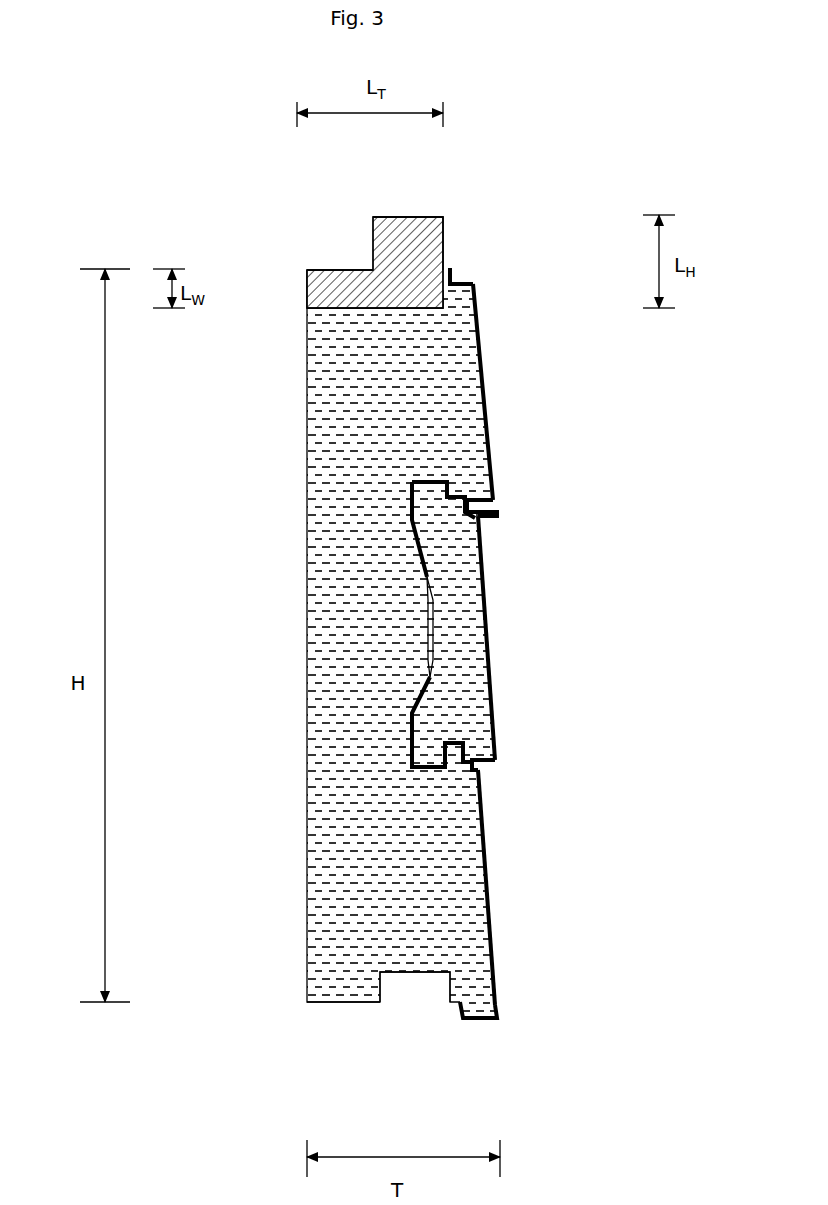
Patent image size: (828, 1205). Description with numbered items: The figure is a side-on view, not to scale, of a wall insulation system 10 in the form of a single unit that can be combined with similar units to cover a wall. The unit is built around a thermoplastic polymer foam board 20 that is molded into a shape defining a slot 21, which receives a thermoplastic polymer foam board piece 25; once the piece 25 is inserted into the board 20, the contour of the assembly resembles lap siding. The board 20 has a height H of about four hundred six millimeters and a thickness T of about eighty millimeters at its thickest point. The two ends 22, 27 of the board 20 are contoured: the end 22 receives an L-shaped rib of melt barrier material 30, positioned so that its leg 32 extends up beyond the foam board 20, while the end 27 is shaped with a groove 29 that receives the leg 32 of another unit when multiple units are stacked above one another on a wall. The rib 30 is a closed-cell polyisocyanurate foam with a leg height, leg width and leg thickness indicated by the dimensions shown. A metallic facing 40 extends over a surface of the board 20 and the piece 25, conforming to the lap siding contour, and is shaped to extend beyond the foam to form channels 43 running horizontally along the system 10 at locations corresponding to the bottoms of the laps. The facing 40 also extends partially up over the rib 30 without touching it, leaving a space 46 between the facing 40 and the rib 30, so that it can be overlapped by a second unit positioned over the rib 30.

The wall insulation system 10 is at (222, 240).
The thermoplastic polymer foam board 20 is at (330, 430).
The slot 21 is at (430, 620).
The end 22 is at (350, 1002).
The thermoplastic polymer foam board piece 25 is at (482, 553).
The end 27 is at (322, 268).
The groove 29 is at (411, 1008).
The rib of melt barrier material 30 is at (358, 270).
The leg 32 is at (405, 217).
The metallic facing 40 is at (478, 330).
The channels 43 is at (497, 503).
The space 46 is at (470, 280).